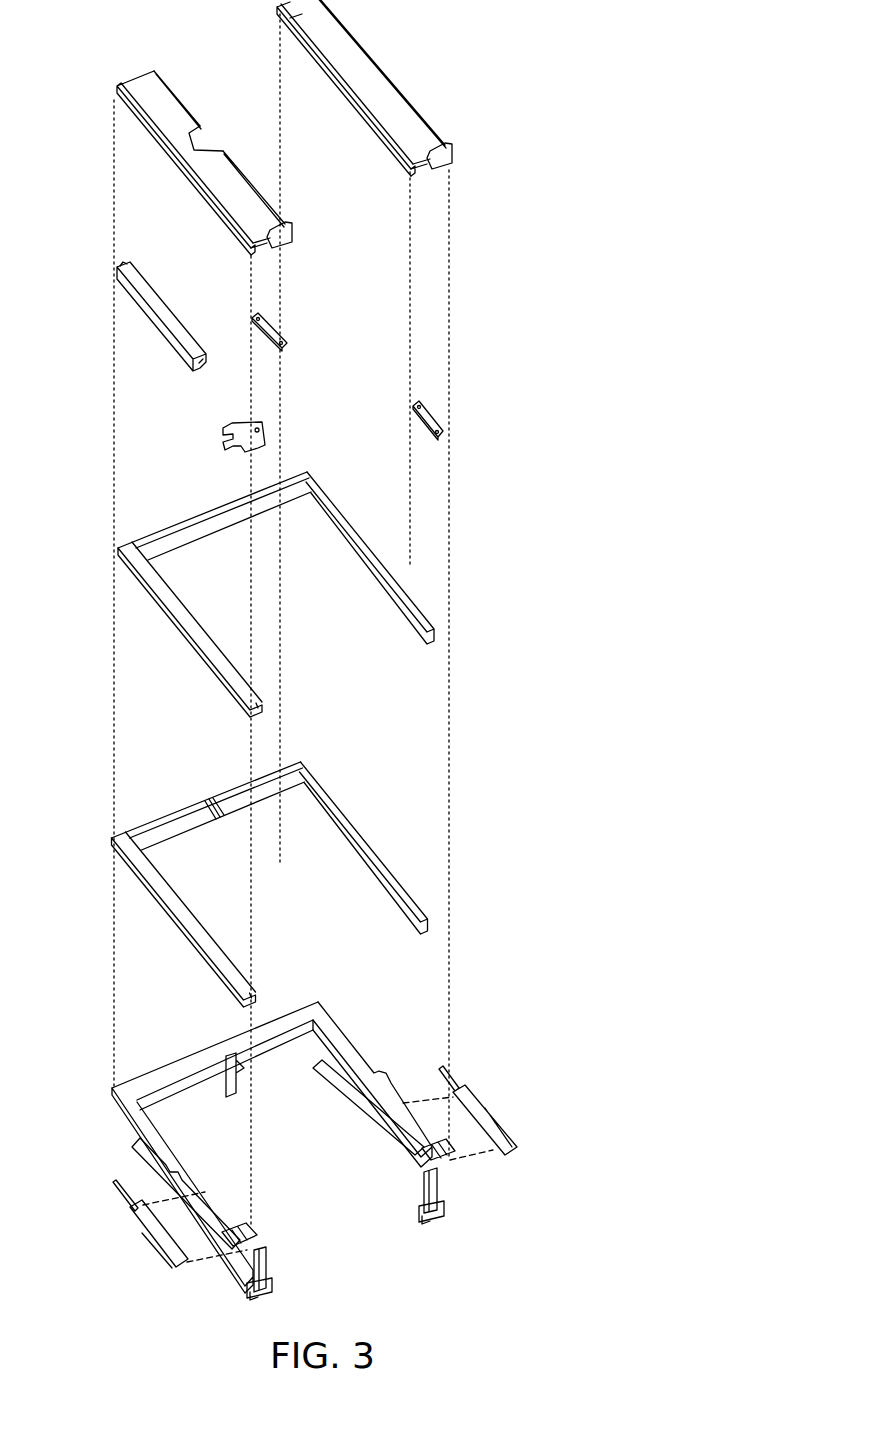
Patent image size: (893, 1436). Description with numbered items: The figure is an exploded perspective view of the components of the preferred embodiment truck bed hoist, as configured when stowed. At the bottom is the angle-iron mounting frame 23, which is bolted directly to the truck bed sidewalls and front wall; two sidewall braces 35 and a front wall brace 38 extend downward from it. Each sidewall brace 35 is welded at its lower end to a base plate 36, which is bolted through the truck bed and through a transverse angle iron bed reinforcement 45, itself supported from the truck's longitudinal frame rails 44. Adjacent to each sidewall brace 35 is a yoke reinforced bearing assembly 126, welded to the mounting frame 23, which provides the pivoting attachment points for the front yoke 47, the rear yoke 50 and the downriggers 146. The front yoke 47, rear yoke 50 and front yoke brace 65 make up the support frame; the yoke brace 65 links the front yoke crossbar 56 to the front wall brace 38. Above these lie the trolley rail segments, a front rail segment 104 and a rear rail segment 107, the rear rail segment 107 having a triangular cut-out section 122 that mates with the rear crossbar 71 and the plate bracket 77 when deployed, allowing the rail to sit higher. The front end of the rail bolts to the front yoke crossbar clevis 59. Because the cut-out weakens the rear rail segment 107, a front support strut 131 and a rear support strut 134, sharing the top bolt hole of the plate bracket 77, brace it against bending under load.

The mounting frame 23 is at (343, 1043).
The sidewall brace 35 is at (260, 1263).
The base plate 36 is at (268, 1288).
The front wall brace 38 is at (226, 1080).
The longitudinal frame rail 44 is at (137, 1150).
The angle iron bed reinforcement 45 is at (256, 1298).
The front yoke 47 is at (282, 882).
The rear yoke 50 is at (313, 594).
The front yoke crossbar 56 is at (170, 820).
The front yoke crossbar clevis 59 is at (217, 798).
The front yoke brace 65 is at (150, 298).
The rear crossbar 71 is at (207, 520).
The plate bracket 77 is at (240, 452).
The front rail segment 104 is at (367, 78).
The rear rail segment 107 is at (176, 156).
The cut-out section 122 is at (200, 143).
The yoke reinforced bearing assembly 126 is at (250, 1228).
The front support strut 131 is at (273, 332).
The rear support strut 134 is at (433, 418).
The downrigger 146 is at (172, 1270).